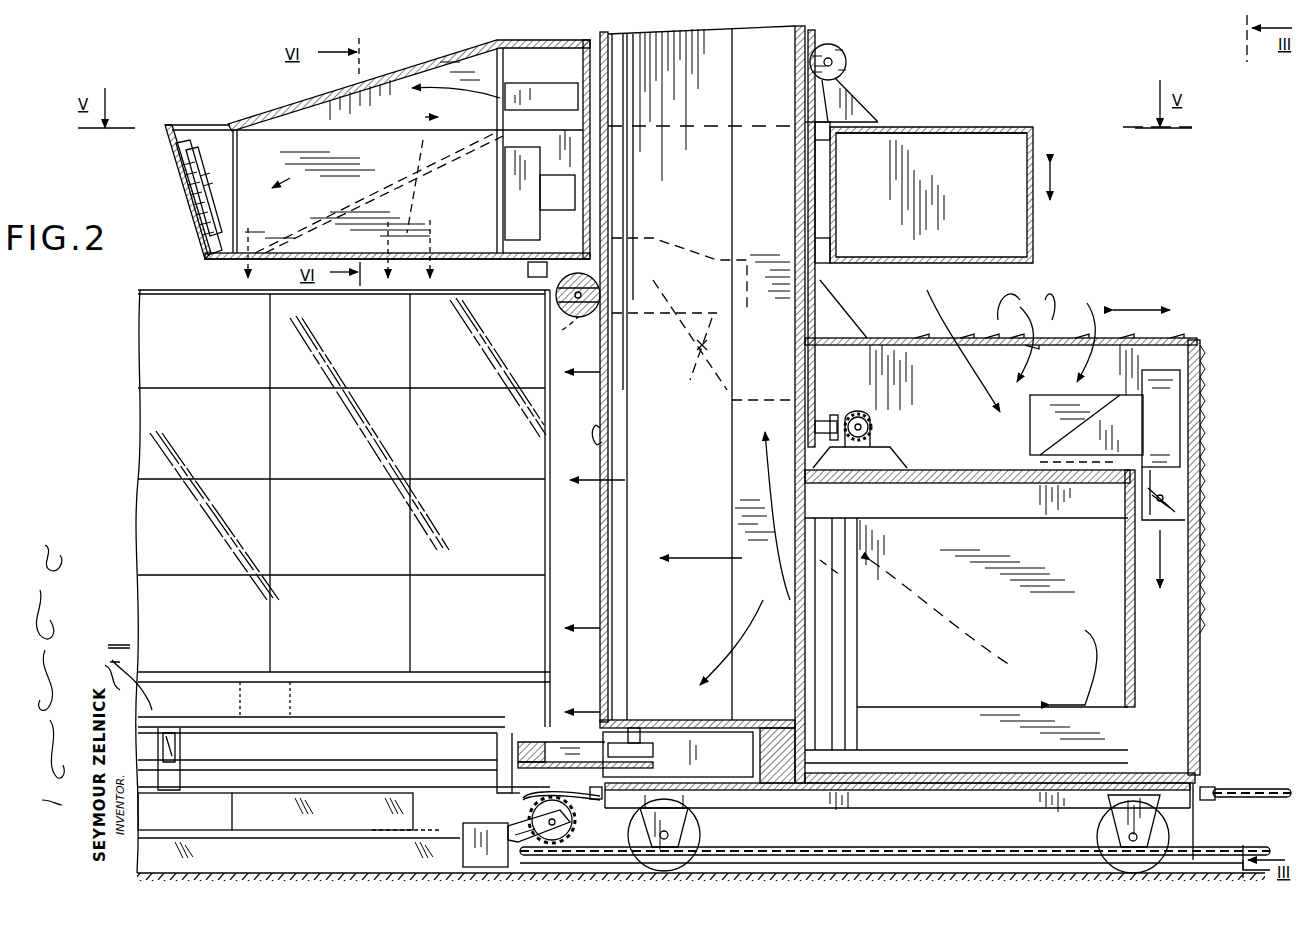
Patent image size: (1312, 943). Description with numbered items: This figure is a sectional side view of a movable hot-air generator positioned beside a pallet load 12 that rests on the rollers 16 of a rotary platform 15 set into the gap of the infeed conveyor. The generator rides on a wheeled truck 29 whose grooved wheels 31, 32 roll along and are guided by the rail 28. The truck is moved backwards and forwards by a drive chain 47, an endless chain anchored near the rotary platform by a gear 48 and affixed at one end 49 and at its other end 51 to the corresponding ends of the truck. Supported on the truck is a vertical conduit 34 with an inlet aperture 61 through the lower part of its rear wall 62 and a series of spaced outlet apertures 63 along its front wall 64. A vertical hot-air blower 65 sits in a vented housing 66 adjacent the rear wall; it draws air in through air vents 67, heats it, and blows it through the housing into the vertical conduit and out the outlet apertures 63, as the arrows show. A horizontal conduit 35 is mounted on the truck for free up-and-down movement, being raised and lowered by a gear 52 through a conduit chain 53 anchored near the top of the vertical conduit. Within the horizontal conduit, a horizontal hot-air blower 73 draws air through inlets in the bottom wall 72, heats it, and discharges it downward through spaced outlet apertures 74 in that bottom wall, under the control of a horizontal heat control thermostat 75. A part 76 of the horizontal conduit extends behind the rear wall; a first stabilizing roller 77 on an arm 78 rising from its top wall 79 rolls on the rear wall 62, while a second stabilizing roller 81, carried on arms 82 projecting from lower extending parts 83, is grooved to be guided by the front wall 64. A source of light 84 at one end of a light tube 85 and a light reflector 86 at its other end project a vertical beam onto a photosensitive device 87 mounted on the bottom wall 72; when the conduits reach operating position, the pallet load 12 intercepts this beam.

The pallet load 12 is at (137, 429).
The rotary platform 15 is at (299, 825).
The rollers 16 is at (440, 772).
The rail 28 is at (983, 850).
The wheeled truck 29 is at (892, 805).
The wheel 31 is at (720, 829).
The wheel 32 is at (1108, 832).
The vertical conduit 34 is at (685, 404).
The horizontal conduit 35 is at (258, 140).
The drive chain 47 is at (1272, 840).
The gear 48 is at (578, 836).
The end of drive chain 49 is at (1230, 780).
The other end of drive chain 51 is at (592, 794).
The gear 52 is at (856, 415).
The conduit chain 53 is at (816, 286).
The inlet aperture 61 is at (805, 535).
The rear wall 62 is at (805, 498).
The outlet apertures 63 is at (581, 437).
The front wall 64 is at (600, 400).
The vertical hot-air blower 65 is at (1107, 445).
The vented housing 66 is at (1176, 340).
The air vents 67 is at (1008, 310).
The bottom wall 72 is at (245, 260).
The horizontal hot-air blower 73 is at (541, 162).
The outlet apertures 74 is at (432, 260).
The horizontal heat control thermostat 75 is at (186, 163).
The part of horizontal conduit 76 is at (995, 136).
The first stabilizing roller 77 is at (846, 58).
The arm 78 is at (850, 106).
The top wall 79 is at (955, 130).
The second stabilizing roller 81 is at (556, 312).
The arms 82 is at (572, 333).
The lower extending parts 83 is at (701, 320).
The source of light 84 is at (653, 752).
The light tube 85 is at (554, 793).
The light reflector 86 is at (543, 752).
The photosensitive device 87 is at (528, 268).